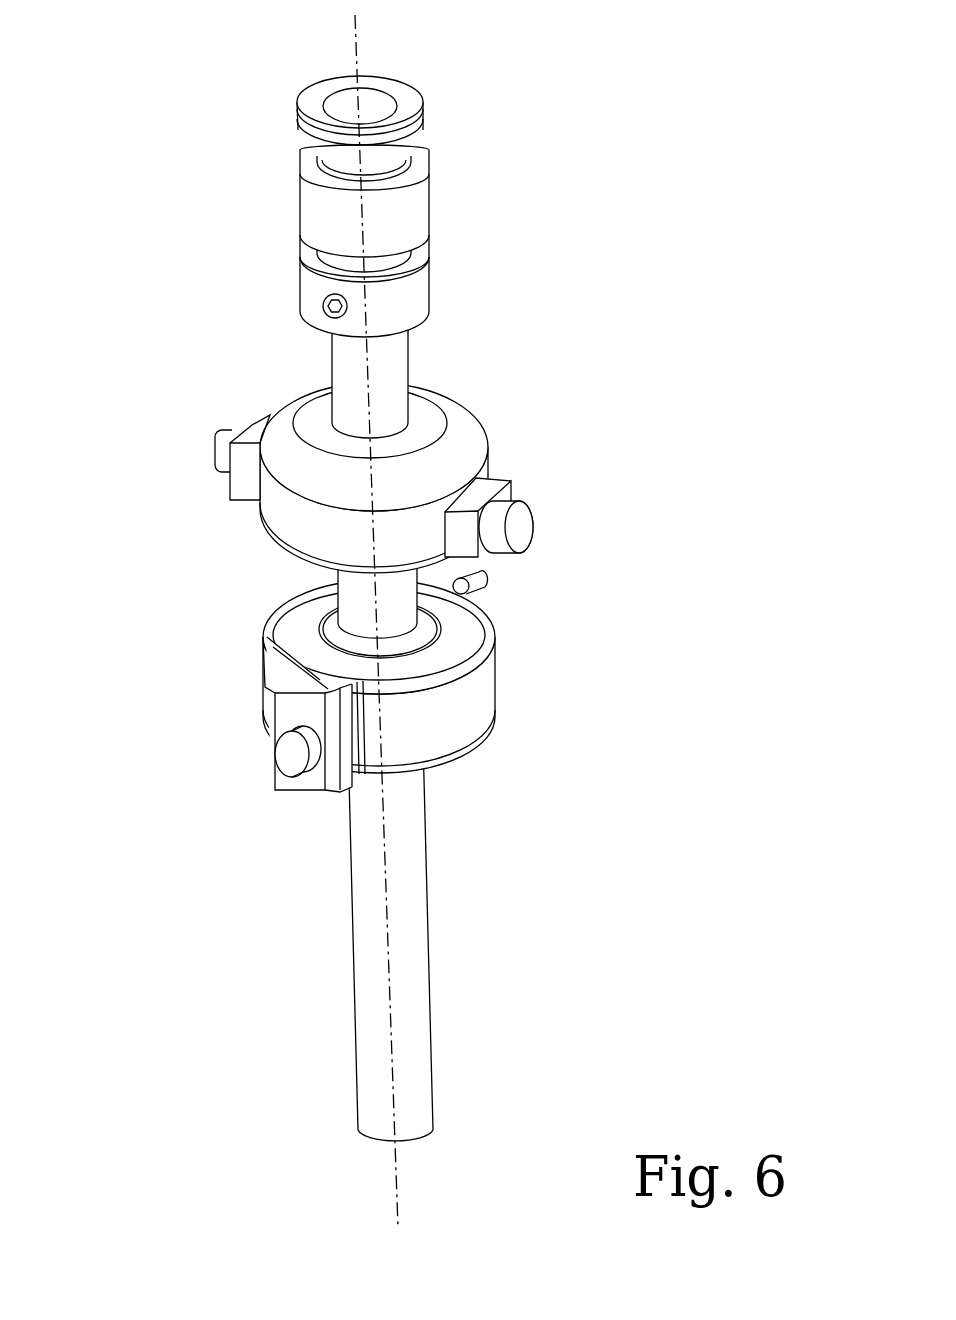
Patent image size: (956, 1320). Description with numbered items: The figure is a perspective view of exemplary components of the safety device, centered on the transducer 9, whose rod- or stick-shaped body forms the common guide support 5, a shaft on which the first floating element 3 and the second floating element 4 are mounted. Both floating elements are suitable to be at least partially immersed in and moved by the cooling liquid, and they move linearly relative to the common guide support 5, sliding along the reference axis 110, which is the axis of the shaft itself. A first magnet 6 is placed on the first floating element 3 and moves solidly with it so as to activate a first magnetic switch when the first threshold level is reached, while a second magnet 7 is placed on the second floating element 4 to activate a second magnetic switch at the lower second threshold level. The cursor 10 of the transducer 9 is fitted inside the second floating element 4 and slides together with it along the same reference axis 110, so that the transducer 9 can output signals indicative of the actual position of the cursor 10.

The transducer 9 is at (187, 387).
The common guide support 5 is at (393, 363).
The first floating element 3 is at (462, 434).
The first magnet 6 is at (510, 515).
The second floating element 4 is at (450, 608).
The cursor 10 is at (423, 628).
The second magnet 7 is at (297, 755).
The reference axis 110 is at (397, 1067).